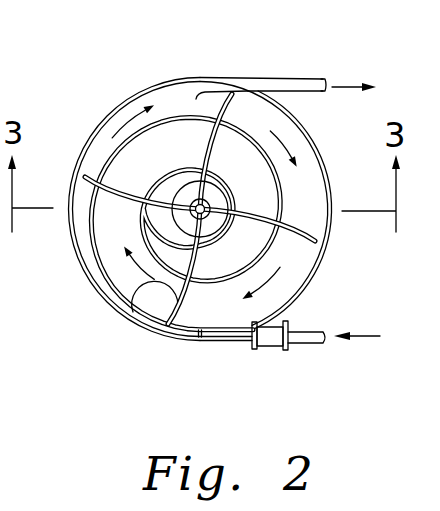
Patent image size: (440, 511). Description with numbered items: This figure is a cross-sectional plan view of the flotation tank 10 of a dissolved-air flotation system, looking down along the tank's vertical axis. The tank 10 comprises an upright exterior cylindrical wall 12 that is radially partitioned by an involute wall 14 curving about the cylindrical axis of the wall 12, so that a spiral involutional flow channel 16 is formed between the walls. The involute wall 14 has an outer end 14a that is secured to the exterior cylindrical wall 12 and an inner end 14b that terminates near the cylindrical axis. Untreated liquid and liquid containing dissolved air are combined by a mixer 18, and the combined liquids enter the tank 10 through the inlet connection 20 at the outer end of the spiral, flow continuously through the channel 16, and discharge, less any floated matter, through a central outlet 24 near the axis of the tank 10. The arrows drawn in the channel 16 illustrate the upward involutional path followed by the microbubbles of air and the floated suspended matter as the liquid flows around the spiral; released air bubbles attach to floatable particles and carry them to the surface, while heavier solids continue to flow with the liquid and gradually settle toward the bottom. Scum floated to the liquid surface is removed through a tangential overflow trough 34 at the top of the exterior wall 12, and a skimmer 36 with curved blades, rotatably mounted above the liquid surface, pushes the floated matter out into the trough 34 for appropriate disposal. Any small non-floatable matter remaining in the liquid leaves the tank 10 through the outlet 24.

The flotation tank 10 is at (156, 90).
The exterior cylindrical wall 12 is at (102, 122).
The involute wall 14 is at (103, 262).
The outer end 14a is at (303, 278).
The inner end 14b is at (201, 228).
The involutional flow channel 16 is at (203, 92).
The mixer 18 is at (273, 342).
The inlet channel 20 is at (240, 340).
The outlet 24 is at (205, 193).
The tangential overflow trough 34 is at (287, 85).
The skimmer 36 is at (137, 306).